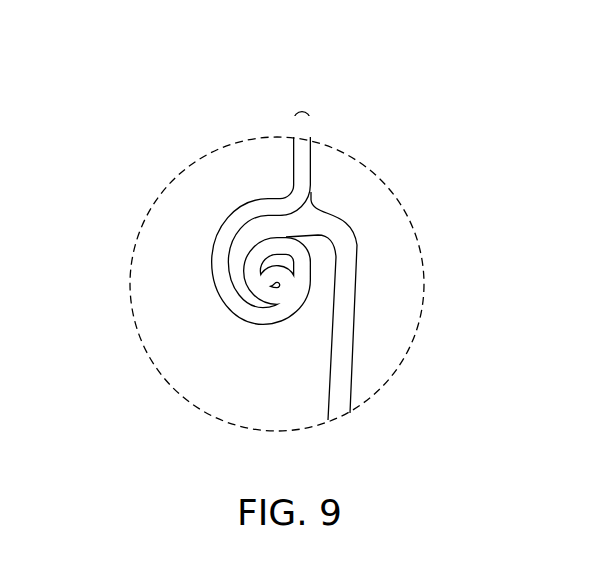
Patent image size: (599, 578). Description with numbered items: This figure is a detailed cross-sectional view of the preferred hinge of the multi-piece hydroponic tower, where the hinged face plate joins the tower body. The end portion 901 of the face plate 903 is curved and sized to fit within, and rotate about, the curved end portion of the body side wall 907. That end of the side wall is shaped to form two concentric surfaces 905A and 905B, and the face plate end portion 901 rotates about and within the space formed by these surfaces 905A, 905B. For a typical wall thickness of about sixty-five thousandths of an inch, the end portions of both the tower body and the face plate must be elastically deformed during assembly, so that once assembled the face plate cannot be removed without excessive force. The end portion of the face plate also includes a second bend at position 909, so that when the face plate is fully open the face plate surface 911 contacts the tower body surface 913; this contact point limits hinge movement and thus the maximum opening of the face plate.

The end portion of face plate 901 is at (264, 226).
The face plate 903 is at (343, 353).
The concentric surface 905A is at (233, 300).
The concentric surface 905B is at (262, 265).
The body side wall 907 is at (293, 155).
The position of second bend 909 is at (279, 225).
The face plate surface 911 is at (293, 220).
The tower body surface 913 is at (291, 207).